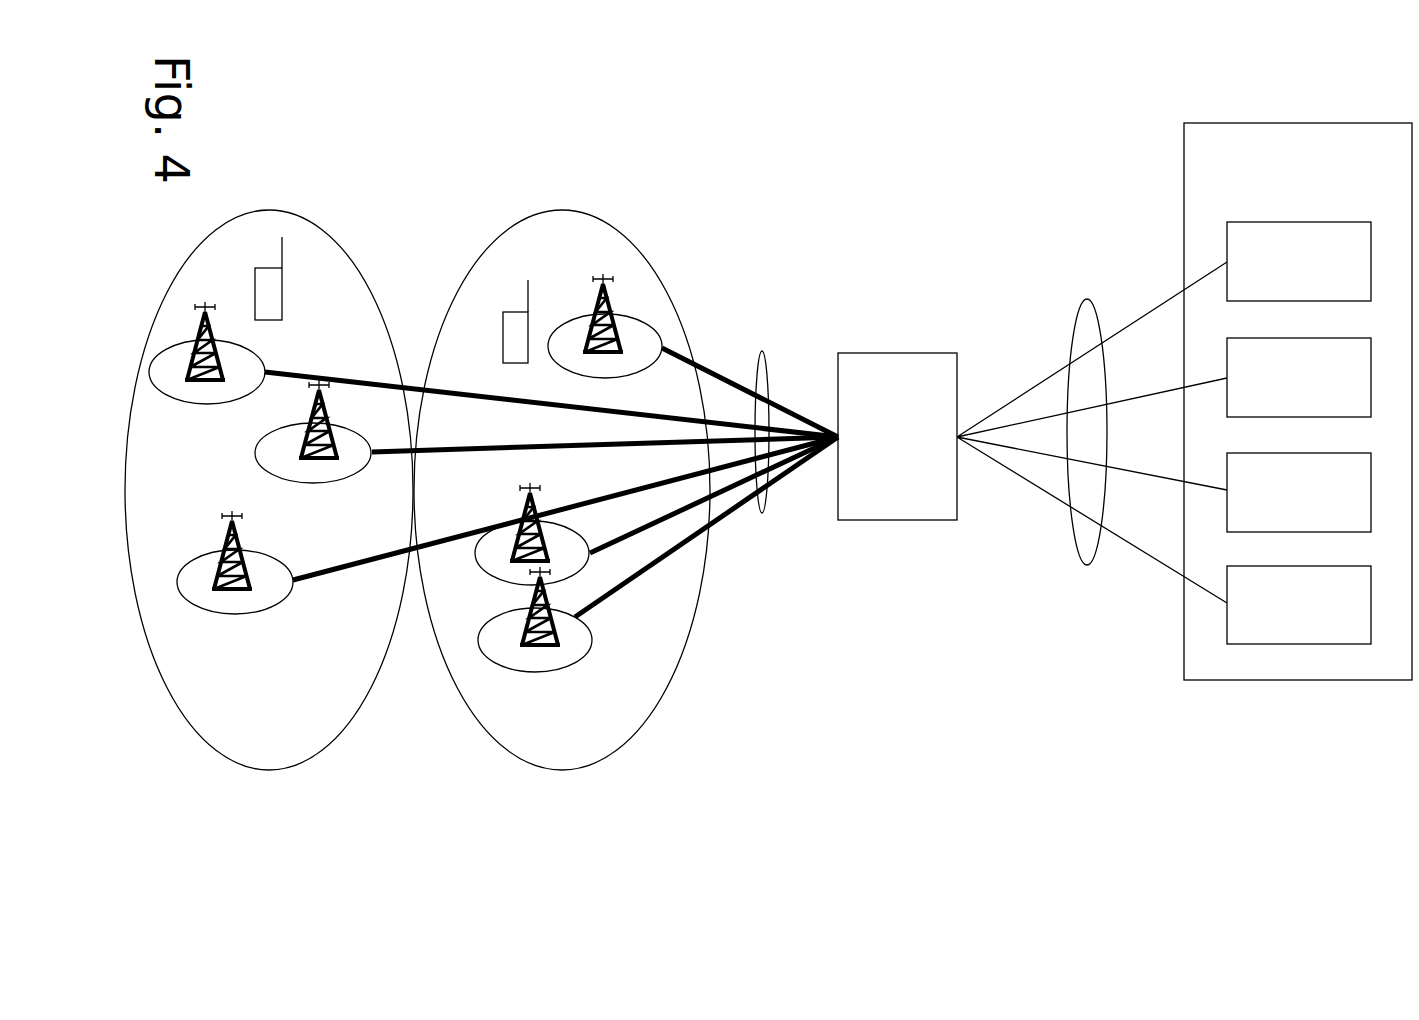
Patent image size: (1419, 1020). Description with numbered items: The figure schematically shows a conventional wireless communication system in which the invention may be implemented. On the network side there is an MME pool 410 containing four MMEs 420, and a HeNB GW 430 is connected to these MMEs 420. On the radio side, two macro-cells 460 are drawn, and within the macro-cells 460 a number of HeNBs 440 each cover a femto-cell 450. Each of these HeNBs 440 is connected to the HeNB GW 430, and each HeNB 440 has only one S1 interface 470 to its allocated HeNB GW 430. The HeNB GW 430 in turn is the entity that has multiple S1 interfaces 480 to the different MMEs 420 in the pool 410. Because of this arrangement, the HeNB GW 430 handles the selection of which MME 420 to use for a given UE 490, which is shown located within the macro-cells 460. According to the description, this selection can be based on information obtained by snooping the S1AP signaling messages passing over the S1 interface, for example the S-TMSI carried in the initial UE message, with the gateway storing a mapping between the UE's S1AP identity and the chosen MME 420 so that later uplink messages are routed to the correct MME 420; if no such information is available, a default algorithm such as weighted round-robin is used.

The MME pool 410 is at (1323, 179).
The MME 420 is at (1323, 279).
The HeNB GW 430 is at (918, 498).
The HeNB 440 is at (604, 282).
The femto-cell 450 is at (648, 343).
The macro-cell 460 is at (547, 218).
The S1 interface 470 is at (762, 512).
The S1 interfaces 480 is at (1087, 537).
The UE 490 is at (510, 325).